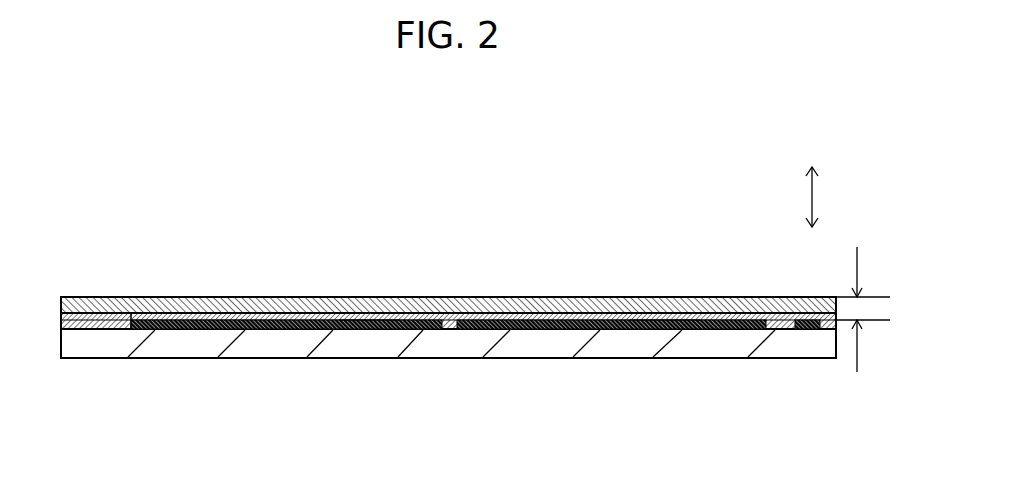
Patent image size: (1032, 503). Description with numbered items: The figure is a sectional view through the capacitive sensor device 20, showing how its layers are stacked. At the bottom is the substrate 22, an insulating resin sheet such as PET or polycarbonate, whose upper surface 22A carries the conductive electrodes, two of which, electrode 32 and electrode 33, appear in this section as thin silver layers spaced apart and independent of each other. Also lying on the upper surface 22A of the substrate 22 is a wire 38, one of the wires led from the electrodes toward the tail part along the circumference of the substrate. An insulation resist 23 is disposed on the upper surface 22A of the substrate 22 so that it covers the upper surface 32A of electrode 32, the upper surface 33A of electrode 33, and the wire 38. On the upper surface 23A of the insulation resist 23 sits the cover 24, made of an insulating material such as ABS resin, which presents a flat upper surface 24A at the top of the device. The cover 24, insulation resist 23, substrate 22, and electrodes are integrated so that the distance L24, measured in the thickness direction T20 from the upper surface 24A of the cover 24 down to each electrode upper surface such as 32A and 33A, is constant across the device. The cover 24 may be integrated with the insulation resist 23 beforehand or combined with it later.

The sensor device 20 is at (687, 190).
The substrate 22 is at (433, 343).
The upper surface of substrate 22A is at (73, 313).
The insulation resist 23 is at (247, 315).
The upper surface of insulation resist 23A is at (131, 318).
The cover 24 is at (557, 303).
The upper surface of cover 24A is at (293, 297).
The electrode 32 is at (290, 330).
The upper surface of electrode 32A is at (369, 320).
The electrode 33 is at (642, 330).
The upper surface of electrode 33A is at (663, 322).
The wire 38 is at (806, 329).
The thickness direction T20 is at (813, 200).
The distance L24 is at (866, 309).